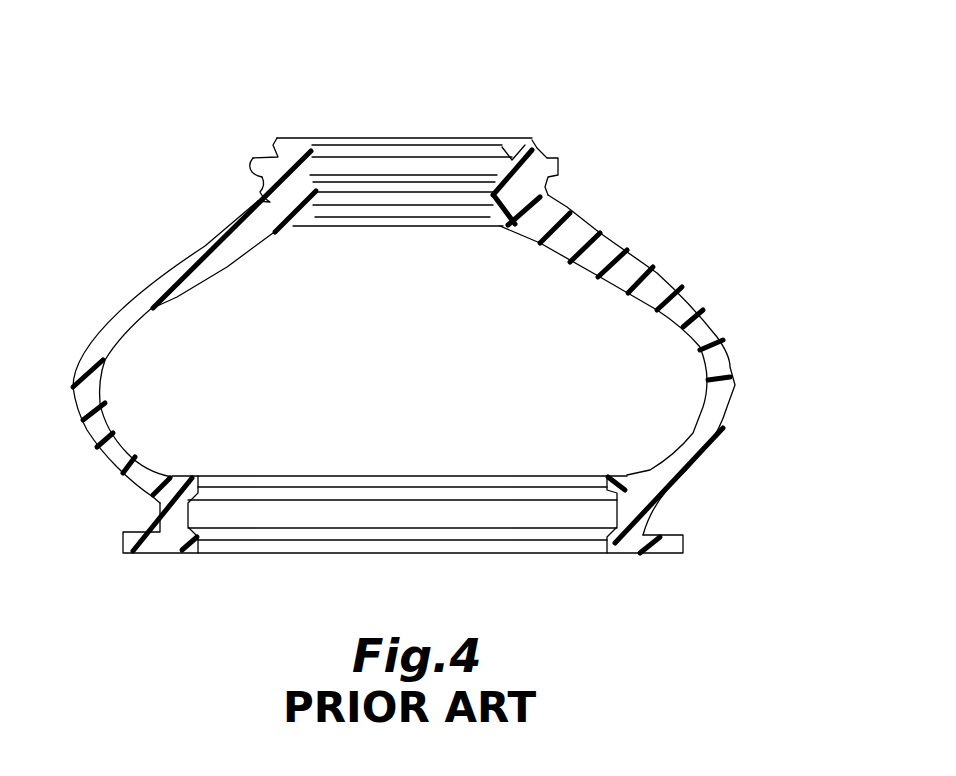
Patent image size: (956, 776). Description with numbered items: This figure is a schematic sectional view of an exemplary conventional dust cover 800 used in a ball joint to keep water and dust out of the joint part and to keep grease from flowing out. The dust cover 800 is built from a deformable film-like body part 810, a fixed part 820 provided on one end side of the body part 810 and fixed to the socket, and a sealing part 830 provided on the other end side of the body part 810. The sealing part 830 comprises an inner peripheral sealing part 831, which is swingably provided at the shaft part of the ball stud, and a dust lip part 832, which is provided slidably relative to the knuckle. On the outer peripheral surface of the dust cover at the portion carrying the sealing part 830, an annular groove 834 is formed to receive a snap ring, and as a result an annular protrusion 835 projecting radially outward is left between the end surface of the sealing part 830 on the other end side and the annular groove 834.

The dust cover 800 is at (440, 349).
The body part 810 is at (690, 307).
The fixed part 820 is at (643, 513).
The sealing part 830 is at (393, 176).
The inner peripheral sealing part 831 is at (330, 212).
The dust lip part 832 is at (276, 140).
The annular groove 834 is at (260, 183).
The annular protrusion 835 is at (252, 160).